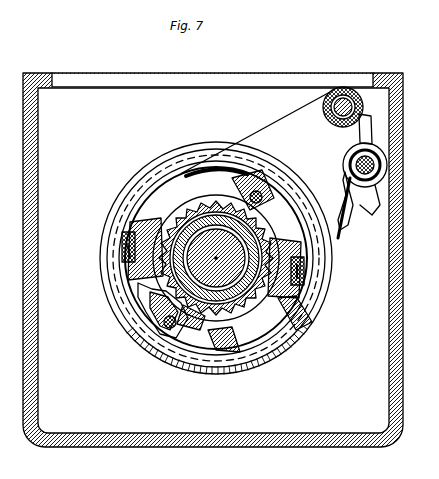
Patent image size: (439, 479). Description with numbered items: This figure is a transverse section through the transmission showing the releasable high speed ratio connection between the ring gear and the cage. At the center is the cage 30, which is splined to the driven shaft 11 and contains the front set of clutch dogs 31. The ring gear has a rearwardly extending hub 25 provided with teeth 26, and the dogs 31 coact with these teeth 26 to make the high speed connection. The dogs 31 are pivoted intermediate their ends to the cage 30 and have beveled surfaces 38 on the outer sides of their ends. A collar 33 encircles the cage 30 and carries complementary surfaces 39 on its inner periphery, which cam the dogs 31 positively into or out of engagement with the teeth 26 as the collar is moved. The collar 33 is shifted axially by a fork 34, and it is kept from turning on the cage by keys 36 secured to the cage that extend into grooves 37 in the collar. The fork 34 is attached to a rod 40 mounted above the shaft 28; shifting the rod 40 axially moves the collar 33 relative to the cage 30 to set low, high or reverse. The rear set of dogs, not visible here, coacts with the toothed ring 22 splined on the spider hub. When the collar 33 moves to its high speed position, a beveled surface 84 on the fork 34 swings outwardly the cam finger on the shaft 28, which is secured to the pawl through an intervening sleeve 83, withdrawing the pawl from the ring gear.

The driven shaft 11 is at (302, 292).
The ring 22 is at (359, 201).
The hub 25 is at (171, 222).
The teeth 26 is at (150, 233).
The shaft 28 is at (343, 165).
The cage 30 is at (134, 270).
The clutch dogs 31 is at (215, 150).
The collar 33 is at (137, 336).
The fork 34 is at (264, 114).
The keys 36 is at (125, 238).
The grooves 37 is at (125, 252).
The beveled surfaces 38 is at (200, 170).
The complementary surfaces 39 is at (256, 190).
The rod 40 is at (323, 110).
The sleeve 83 is at (360, 148).
The beveled surface 84 is at (343, 232).